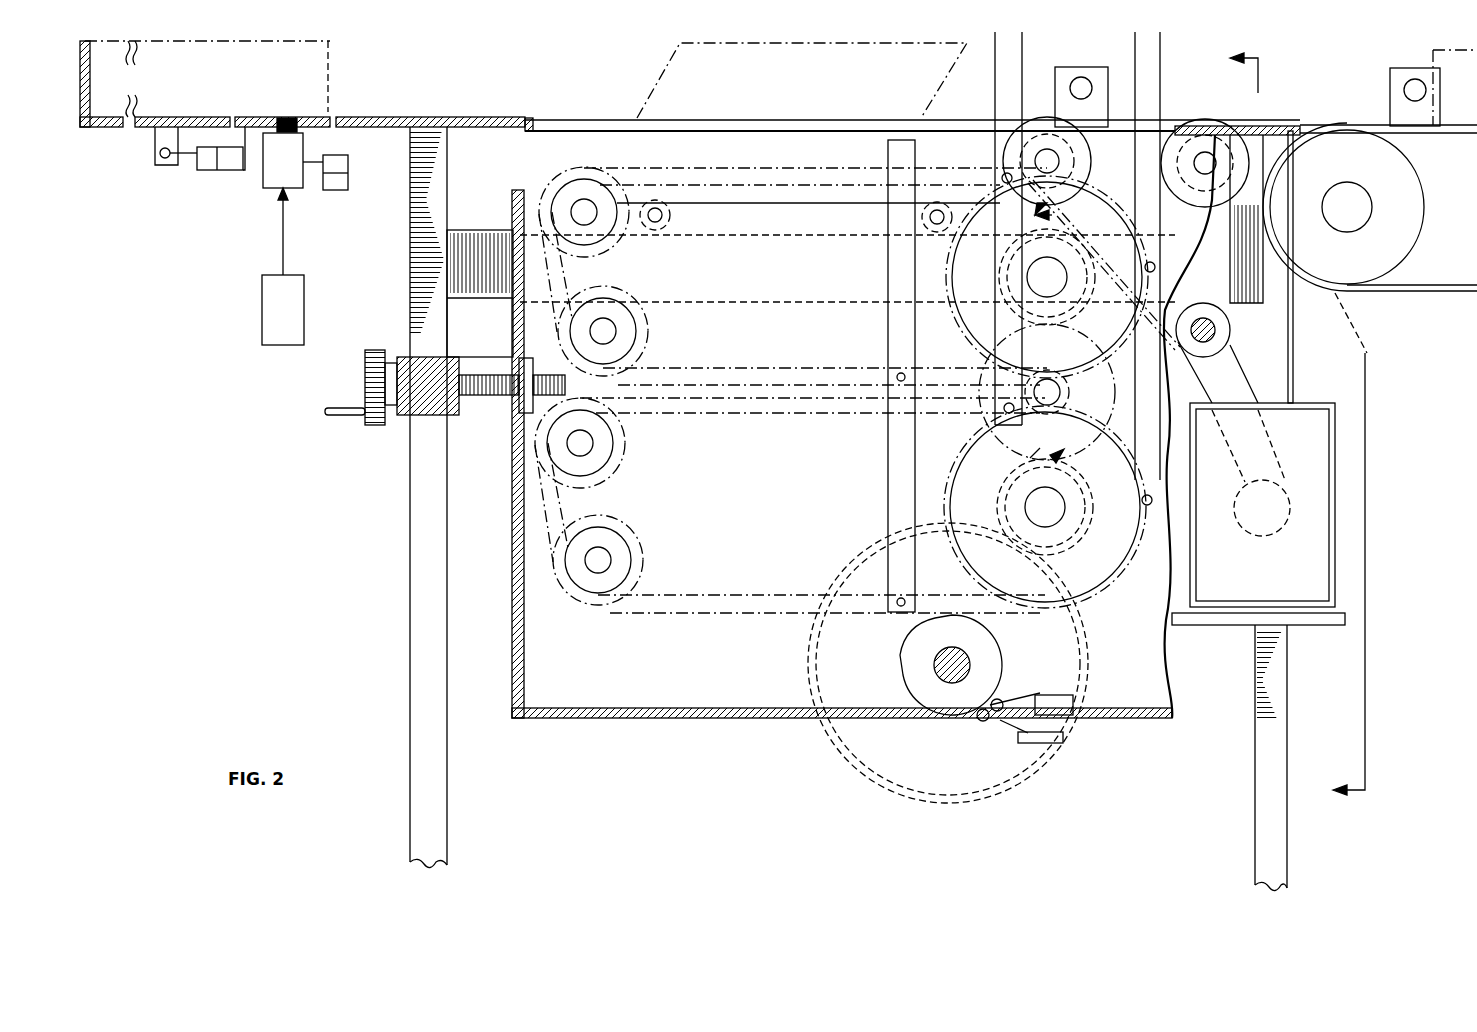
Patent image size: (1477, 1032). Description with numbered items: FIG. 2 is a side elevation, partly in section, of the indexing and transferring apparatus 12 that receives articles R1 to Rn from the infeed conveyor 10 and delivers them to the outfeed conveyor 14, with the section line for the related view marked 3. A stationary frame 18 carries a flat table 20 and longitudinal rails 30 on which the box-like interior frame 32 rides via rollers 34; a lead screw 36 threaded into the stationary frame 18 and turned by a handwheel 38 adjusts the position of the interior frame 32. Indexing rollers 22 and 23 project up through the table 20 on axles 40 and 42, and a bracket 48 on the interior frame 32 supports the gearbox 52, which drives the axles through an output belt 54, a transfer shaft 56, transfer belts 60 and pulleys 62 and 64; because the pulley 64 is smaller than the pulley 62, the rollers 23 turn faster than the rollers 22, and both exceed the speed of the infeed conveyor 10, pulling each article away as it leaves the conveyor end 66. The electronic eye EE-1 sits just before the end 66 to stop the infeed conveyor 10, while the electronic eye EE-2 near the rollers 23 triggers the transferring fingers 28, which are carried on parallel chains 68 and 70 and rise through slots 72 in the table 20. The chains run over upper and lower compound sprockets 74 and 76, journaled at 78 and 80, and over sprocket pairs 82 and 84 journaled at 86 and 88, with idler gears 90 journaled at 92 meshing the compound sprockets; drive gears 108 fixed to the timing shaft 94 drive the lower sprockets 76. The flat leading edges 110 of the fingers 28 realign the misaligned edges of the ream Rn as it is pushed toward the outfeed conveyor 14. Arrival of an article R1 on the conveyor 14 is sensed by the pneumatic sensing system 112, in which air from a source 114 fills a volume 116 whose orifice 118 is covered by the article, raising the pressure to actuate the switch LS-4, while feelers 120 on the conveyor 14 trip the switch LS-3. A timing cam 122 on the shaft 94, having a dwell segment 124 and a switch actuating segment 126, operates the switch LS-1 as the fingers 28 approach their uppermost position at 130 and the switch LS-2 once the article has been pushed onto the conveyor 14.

The infeed conveyor 10 is at (1410, 140).
The indexing and transferring apparatus 12 is at (842, 454).
The outfeed conveyor 14 is at (170, 108).
The stationary frame 18 is at (410, 266).
The table 20 is at (490, 118).
The indexing rollers 22 is at (1206, 124).
The indexing rollers 23 is at (1065, 110).
The transferring fingers 28 is at (1023, 57).
The longitudinal rails 30 is at (458, 228).
The interior frame 32 is at (1165, 668).
The rollers 34 is at (690, 199).
The lead screw 36 is at (472, 376).
The handwheel 38 is at (364, 363).
The axle 40 is at (1203, 162).
The axle 42 is at (1059, 160).
The bracket 48 is at (1310, 626).
The gearbox 52 is at (1262, 505).
The output chain or belt 54 is at (1244, 376).
The transfer shaft 56 is at (1215, 330).
The transfer chains or belts 60 is at (1242, 270).
The sprocket or pulley 62 is at (1248, 124).
The sprocket or pulley 64 is at (1030, 165).
The end of infeed conveyor 66 is at (1275, 216).
The chain 68 is at (717, 366).
The chain 70 is at (712, 594).
The slots 72 is at (532, 118).
The upper compound sprocket 74 is at (965, 329).
The lower compound sprocket 76 is at (965, 466).
The journal 78 is at (1053, 288).
The journal 80 is at (1053, 518).
The upper sprocket pair 82 is at (606, 246).
The lower sprocket pair 84 is at (600, 477).
The journal 86 is at (582, 200).
The journal 88 is at (593, 445).
The idler gears 90 is at (980, 422).
The journal 92 is at (1062, 392).
The timing shaft 94 is at (935, 668).
The drive gears 108 is at (1075, 640).
The leading edges 110 is at (888, 144).
The pneumatic sensing system 112 is at (298, 186).
The source of pressurized air 114 is at (262, 312).
The volume 116 is at (293, 160).
The orifice opening 118 is at (288, 120).
The feelers 120 is at (155, 148).
The timing cam 122 is at (980, 710).
The dwell segment 124 is at (993, 650).
The switch actuating segment 126 is at (903, 633).
The uppermost finger position 130 is at (1162, 90).
The section line 3 is at (1298, 424).
The article R1 is at (330, 88).
The article Rn is at (672, 77).
The electronic eye EE-1 is at (1390, 88).
The electronic eye EE-2 is at (1084, 74).
The switch LS-1 is at (1078, 704).
The switch LS-2 is at (1066, 742).
The switch LS-3 is at (207, 165).
The pressure sensitive switch LS-4 is at (348, 160).